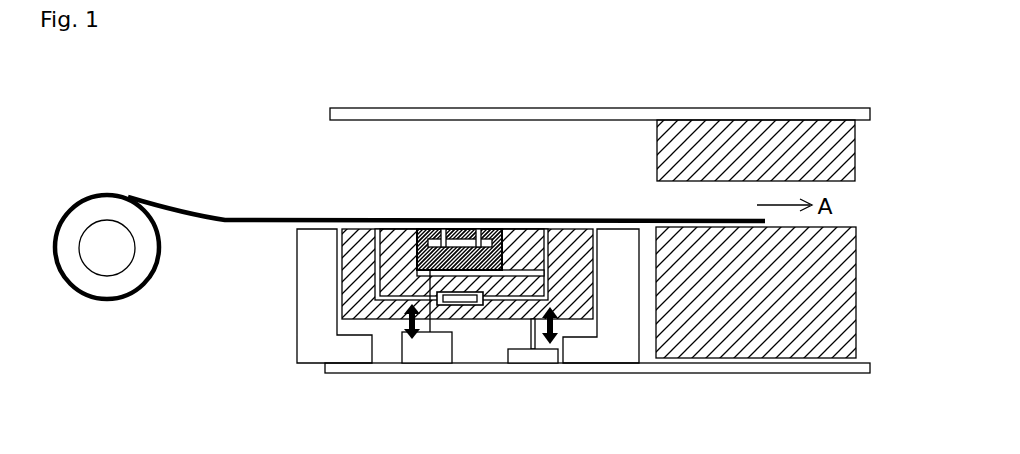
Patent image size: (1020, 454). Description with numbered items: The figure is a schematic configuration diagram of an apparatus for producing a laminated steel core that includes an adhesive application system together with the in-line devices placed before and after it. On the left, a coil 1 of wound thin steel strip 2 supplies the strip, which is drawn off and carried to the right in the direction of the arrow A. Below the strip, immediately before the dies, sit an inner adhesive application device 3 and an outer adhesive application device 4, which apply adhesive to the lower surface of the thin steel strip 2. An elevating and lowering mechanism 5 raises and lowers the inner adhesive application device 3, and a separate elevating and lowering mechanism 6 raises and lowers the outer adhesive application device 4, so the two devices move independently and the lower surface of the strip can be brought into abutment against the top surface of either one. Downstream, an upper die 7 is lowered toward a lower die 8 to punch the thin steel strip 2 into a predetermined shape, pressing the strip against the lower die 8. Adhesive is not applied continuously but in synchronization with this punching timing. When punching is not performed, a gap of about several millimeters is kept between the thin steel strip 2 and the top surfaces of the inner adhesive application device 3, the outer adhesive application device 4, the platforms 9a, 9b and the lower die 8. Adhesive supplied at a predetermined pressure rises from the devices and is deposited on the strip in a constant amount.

The coil 1 is at (143, 297).
The thin steel strip 2 is at (221, 218).
The inner adhesive application device 3 is at (402, 240).
The outer adhesive application device 4 is at (577, 294).
The elevating and lowering mechanism 5 is at (428, 357).
The elevating and lowering mechanism 6 is at (533, 357).
The upper die 7 is at (855, 148).
The lower die 8 is at (856, 290).
The platform 9a is at (303, 298).
The platform 9b is at (617, 312).